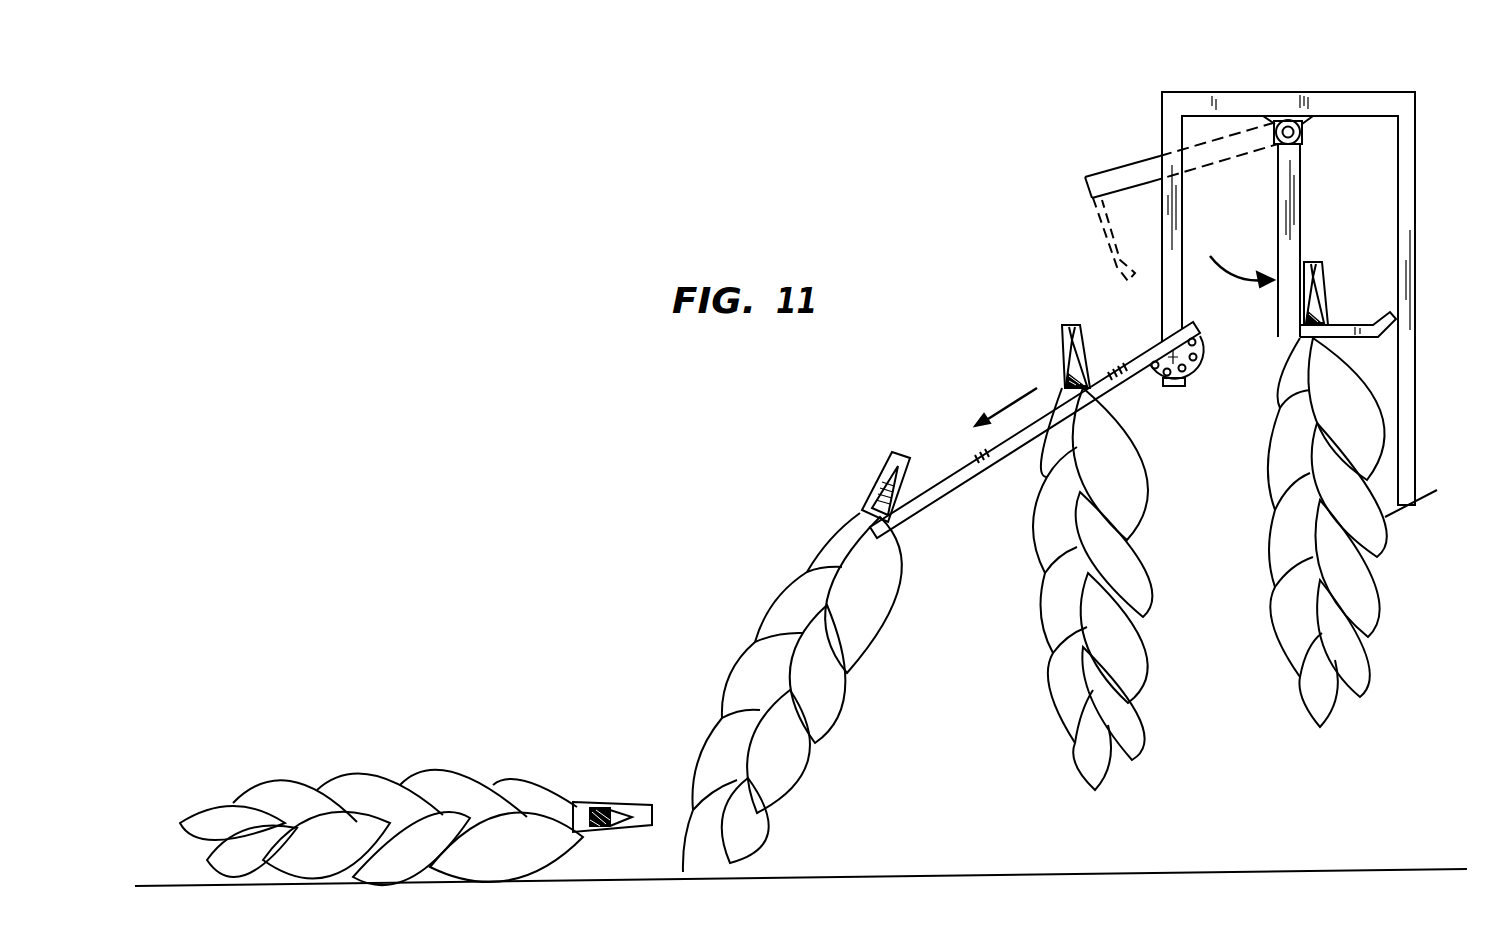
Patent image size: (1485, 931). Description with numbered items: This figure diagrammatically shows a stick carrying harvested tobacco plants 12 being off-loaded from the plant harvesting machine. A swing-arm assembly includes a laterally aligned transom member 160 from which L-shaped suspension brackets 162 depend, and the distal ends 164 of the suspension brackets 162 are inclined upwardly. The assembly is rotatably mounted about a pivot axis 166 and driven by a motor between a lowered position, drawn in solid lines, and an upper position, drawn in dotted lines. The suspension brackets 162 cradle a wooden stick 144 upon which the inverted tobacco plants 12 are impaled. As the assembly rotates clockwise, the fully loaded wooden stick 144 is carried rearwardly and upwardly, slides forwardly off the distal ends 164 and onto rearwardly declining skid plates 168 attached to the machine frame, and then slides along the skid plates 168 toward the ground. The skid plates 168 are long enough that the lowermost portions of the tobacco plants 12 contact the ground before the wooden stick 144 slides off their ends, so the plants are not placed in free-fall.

The tobacco plants 12 is at (745, 598).
The wooden stick 144 is at (860, 498).
The transom member 160 is at (1303, 127).
The suspension brackets 162 is at (1113, 160).
The distal ends 164 is at (1378, 318).
The pivot axis 166 is at (1288, 121).
The skid plates 168 is at (935, 488).